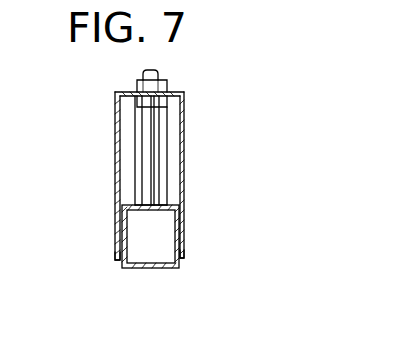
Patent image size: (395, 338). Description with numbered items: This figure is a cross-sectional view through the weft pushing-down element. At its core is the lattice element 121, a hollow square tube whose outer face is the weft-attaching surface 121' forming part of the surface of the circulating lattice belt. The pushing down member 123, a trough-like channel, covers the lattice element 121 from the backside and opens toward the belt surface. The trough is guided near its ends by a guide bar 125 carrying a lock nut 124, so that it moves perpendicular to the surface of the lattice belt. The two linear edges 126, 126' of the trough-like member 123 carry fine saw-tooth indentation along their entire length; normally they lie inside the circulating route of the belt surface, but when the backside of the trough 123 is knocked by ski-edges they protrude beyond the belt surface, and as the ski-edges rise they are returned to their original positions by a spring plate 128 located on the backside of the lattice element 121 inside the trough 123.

The lattice element 121 is at (123, 176).
The weft-attaching surface 121' is at (150, 261).
The pushing down member 123 is at (185, 135).
The lock nut 124 is at (166, 82).
The guide bar 125 is at (135, 127).
The linear edge 126 is at (205, 271).
The linear edge 126' is at (94, 272).
The spring plate 128 is at (163, 183).